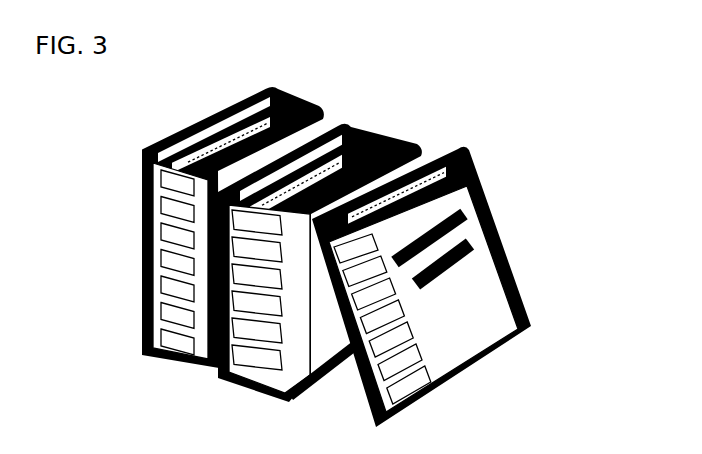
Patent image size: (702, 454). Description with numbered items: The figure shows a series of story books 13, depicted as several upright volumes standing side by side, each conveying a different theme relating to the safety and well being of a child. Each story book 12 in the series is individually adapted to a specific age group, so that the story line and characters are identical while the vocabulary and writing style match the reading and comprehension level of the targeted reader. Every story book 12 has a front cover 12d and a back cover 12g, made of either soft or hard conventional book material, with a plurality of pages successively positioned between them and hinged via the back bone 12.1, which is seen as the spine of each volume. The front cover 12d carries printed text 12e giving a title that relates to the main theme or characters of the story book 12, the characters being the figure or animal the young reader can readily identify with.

The story book 12 is at (372, 259).
The back bone 12.1 is at (258, 332).
The back cover 12g is at (176, 133).
The text 12e is at (433, 259).
The front cover 12d is at (448, 329).
The series of story books 13 is at (193, 383).